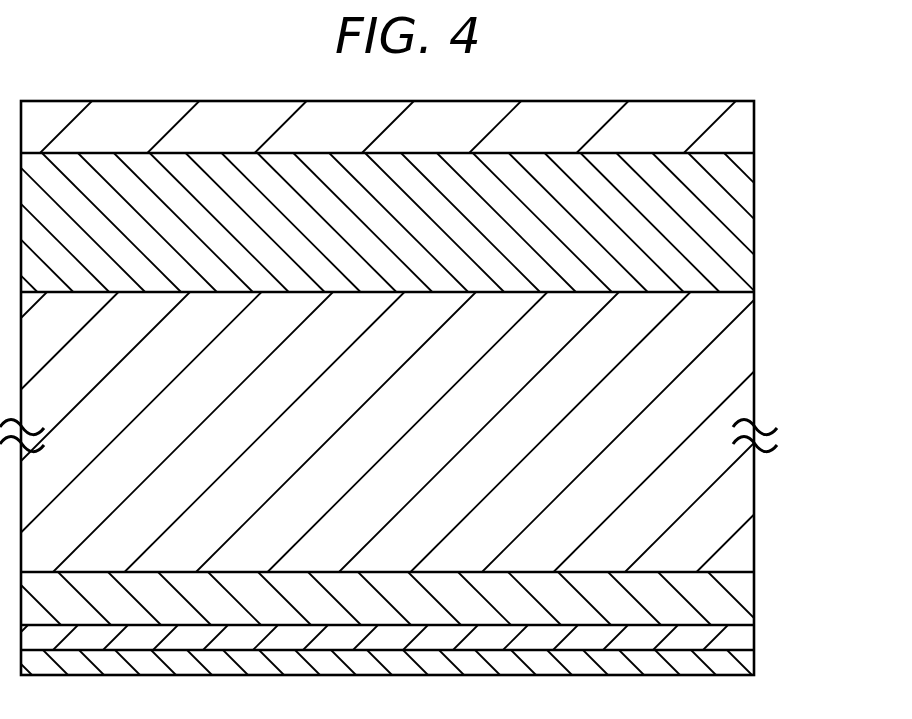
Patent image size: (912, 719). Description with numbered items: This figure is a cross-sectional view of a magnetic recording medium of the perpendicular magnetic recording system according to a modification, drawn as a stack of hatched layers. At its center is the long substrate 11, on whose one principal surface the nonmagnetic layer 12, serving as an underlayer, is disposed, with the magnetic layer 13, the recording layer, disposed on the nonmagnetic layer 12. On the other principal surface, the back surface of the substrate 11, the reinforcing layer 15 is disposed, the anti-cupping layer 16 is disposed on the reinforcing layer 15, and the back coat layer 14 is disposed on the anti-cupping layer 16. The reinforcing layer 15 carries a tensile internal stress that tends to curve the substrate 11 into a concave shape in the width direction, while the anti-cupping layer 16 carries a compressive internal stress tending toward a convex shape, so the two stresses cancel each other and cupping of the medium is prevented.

The substrate 11 is at (743, 349).
The nonmagnetic layer 12 is at (743, 230).
The magnetic layer 13 is at (743, 133).
The back coat layer 14 is at (743, 667).
The reinforcing layer 15 is at (743, 595).
The anti-cupping layer 16 is at (743, 642).